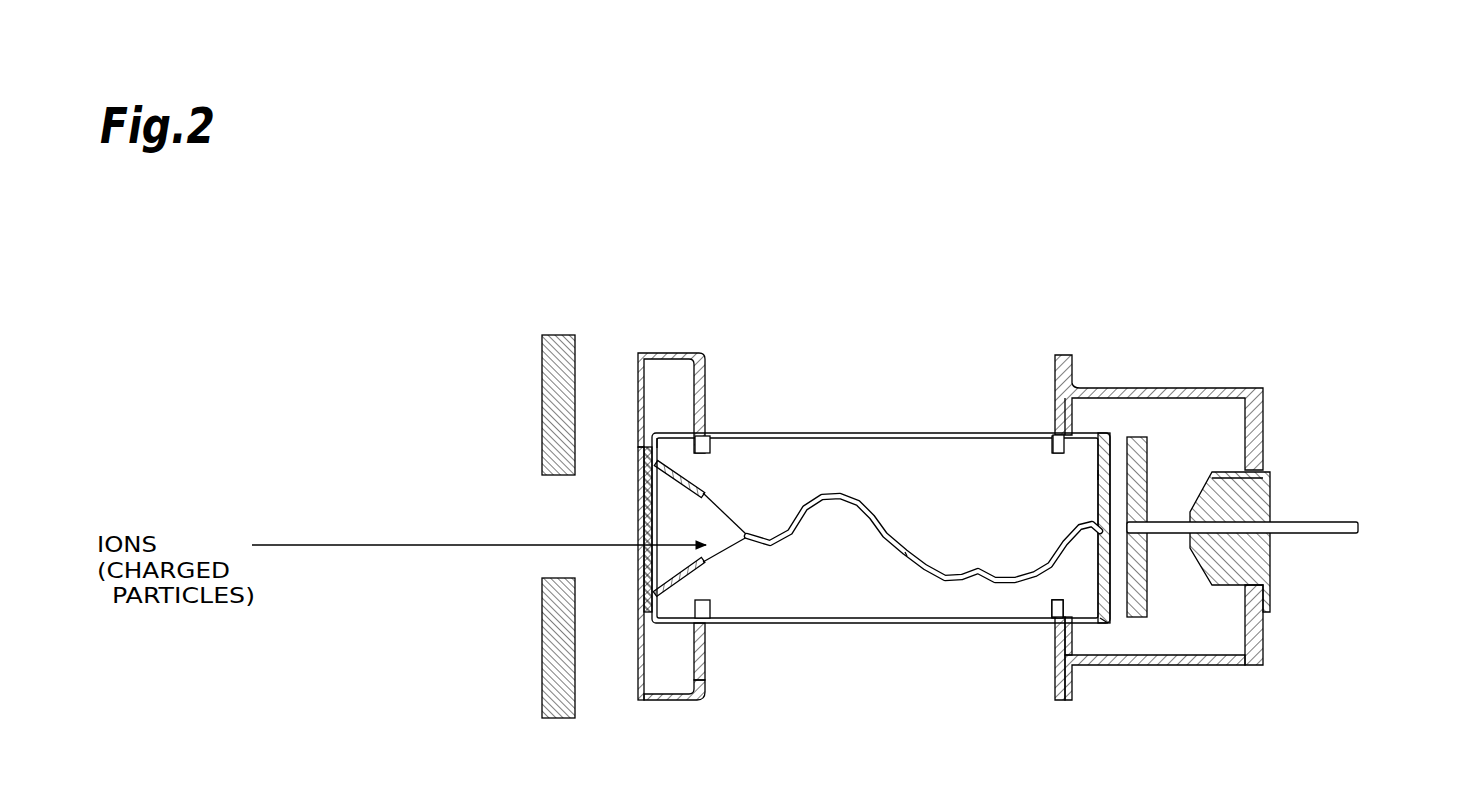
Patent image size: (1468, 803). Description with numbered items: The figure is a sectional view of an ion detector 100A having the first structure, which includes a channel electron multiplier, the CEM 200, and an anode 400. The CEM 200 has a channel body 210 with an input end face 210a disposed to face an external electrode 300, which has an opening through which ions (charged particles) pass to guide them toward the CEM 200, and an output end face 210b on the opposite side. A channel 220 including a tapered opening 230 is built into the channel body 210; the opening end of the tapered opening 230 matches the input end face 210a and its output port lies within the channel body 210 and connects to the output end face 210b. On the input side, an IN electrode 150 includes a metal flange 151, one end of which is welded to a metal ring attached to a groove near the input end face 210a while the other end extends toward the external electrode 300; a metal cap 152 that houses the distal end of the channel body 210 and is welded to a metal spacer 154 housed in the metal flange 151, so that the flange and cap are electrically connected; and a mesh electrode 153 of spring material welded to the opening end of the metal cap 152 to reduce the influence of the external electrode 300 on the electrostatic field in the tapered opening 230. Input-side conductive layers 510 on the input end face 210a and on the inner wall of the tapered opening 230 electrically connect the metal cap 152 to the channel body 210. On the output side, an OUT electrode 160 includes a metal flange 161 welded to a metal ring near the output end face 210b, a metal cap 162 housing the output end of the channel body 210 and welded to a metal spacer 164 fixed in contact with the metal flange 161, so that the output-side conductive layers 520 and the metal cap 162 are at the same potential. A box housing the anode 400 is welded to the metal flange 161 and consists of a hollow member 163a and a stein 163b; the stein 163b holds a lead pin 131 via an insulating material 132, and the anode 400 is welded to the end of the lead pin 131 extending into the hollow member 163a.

The ion detector 100A is at (1365, 240).
The external electrode 300 is at (540, 335).
The IN electrode 150 is at (675, 532).
The metal flange 151 is at (702, 692).
The metal cap 152 is at (654, 623).
The mesh electrode 153 is at (640, 488).
The metal spacer 154 is at (703, 660).
The CEM 200 is at (881, 481).
The channel body 210 is at (905, 452).
The input end face 210a is at (666, 448).
The output end face 210b is at (1095, 479).
The channel 220 is at (912, 573).
The tapered opening 230 is at (748, 537).
The input-side conductive layers 510 is at (708, 562).
The output-side conductive layers 520 is at (1100, 503).
The OUT electrode 160 is at (1176, 534).
The metal flange 161 is at (1052, 672).
The metal cap 162 is at (1107, 622).
The hollow member 163a is at (1073, 663).
The stein 163b is at (1257, 628).
The metal spacer 164 is at (1053, 660).
The anode 400 is at (1150, 468).
The lead pin 131 is at (1333, 520).
The insulating material 132 is at (1272, 492).